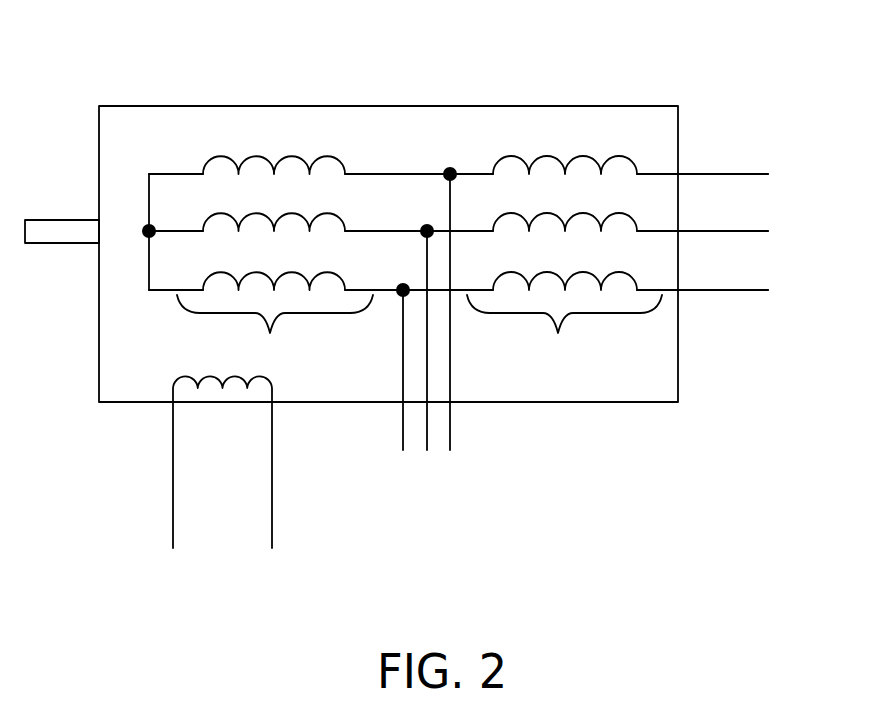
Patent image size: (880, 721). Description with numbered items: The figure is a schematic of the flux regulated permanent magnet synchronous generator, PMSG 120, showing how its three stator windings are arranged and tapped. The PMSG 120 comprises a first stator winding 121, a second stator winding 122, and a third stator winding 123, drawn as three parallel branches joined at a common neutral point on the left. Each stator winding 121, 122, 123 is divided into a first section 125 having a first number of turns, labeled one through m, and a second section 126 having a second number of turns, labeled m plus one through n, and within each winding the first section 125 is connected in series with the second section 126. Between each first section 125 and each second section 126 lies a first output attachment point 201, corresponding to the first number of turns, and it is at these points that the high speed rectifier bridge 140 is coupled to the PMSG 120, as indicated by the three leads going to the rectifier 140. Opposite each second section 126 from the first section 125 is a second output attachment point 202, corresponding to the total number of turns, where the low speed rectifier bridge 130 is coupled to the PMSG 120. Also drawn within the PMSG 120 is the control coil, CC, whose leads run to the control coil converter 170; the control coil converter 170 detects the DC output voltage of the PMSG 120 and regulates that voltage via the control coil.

The flux regulated PMSG 120 is at (217, 106).
The first stator winding 121 is at (395, 172).
The second stator winding 122 is at (411, 230).
The third stator winding 123 is at (386, 294).
The first section 125 is at (275, 329).
The second section 126 is at (564, 329).
The first output attachment point 201 is at (455, 150).
The second output attachment point 202 is at (692, 158).
The low speed rectifier bridge 130 is at (807, 233).
The high speed rectifier bridge 140 is at (427, 478).
The control coil converter 170 is at (222, 466).